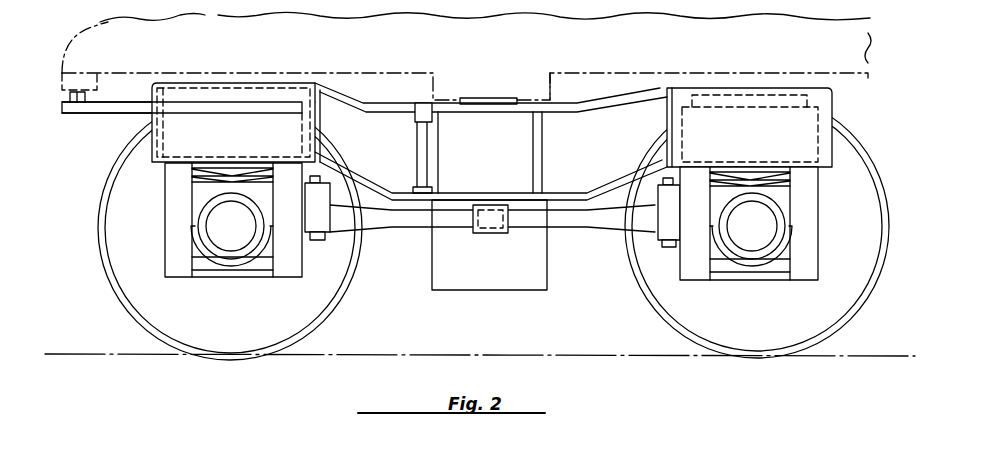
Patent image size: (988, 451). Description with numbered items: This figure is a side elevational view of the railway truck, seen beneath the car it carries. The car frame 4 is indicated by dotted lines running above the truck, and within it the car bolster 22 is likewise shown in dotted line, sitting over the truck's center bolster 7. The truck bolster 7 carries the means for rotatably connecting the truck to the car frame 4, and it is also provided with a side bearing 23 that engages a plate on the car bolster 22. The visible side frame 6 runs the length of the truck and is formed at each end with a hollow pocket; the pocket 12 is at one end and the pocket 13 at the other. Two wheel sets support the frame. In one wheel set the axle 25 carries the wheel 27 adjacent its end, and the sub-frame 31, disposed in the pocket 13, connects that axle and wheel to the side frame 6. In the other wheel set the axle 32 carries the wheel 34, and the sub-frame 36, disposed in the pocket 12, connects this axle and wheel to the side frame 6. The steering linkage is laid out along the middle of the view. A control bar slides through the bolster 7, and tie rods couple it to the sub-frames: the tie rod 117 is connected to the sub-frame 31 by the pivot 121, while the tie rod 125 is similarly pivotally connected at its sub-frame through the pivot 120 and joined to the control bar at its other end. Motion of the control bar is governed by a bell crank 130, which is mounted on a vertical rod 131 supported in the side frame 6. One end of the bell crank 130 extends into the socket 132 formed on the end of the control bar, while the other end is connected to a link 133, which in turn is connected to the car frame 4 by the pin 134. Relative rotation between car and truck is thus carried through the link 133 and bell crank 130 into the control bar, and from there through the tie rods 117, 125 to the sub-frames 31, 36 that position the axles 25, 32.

The car frame 4 is at (100, 23).
The side frame 6 is at (362, 93).
The center bolster 7 is at (468, 282).
The pocket 12 is at (183, 140).
The pocket 13 is at (792, 133).
The car bolster 22 is at (563, 84).
The side bearing 23 is at (480, 98).
The axle 25 is at (752, 233).
The wheel 27 is at (828, 303).
The sub-frame 31 is at (808, 220).
The axle 32 is at (225, 230).
The wheel 34 is at (330, 302).
The sub-frame 36 is at (177, 207).
The tie rod 117 is at (573, 217).
The pivot 120 is at (312, 177).
The pivot 121 is at (663, 178).
The tie rod 125 is at (382, 217).
The bell crank 130 is at (413, 122).
The vertical rod 131 is at (422, 157).
The socket 132 is at (490, 235).
The link 133 is at (128, 107).
The pin 134 is at (80, 93).